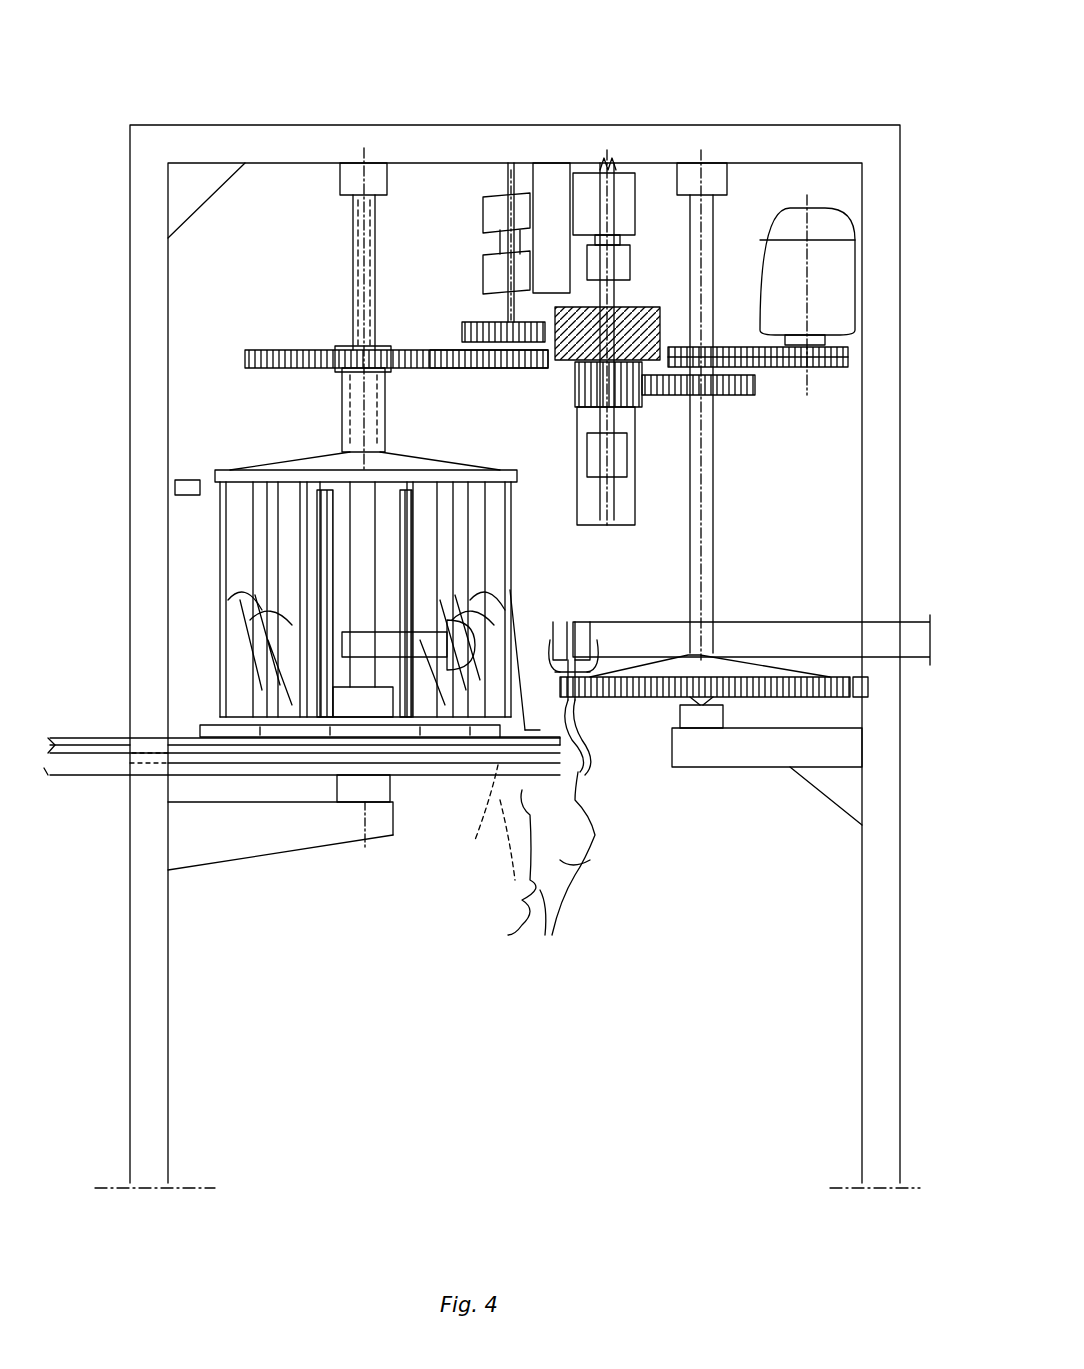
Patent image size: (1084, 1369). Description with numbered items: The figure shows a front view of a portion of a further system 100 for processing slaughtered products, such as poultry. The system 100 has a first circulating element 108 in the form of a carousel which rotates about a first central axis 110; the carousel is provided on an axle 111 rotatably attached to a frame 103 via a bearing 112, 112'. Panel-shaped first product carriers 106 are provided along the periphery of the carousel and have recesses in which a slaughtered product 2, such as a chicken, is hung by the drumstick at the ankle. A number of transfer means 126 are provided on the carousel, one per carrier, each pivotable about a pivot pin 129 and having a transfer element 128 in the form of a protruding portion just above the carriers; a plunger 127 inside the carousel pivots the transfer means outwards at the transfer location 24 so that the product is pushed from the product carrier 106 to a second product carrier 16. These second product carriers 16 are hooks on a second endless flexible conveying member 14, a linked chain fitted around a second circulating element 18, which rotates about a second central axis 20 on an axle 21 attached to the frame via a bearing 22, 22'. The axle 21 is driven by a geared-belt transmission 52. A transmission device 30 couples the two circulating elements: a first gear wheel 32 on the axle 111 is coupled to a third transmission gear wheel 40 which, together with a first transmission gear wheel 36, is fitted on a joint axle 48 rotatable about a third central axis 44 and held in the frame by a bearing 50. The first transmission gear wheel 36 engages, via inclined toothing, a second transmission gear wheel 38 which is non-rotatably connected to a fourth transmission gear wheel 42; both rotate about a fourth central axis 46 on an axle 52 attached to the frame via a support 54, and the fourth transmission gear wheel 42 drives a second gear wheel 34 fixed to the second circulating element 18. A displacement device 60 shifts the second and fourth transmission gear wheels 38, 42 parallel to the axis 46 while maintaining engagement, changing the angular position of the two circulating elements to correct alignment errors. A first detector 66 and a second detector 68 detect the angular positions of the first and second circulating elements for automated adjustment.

The system 100 is at (775, 62).
The frame 103 is at (205, 150).
The bearing 112 is at (321, 193).
The first central axis 110 is at (370, 230).
The axle 111 is at (378, 300).
The first gear wheel 32 is at (285, 342).
The third transmission gear wheel 40 is at (494, 372).
The first circulating element 108 is at (240, 450).
The plunger 127 is at (445, 572).
The pivot pin 129 is at (505, 590).
The transfer means 126 is at (522, 630).
The transfer element 128 is at (548, 672).
The first detector 66 is at (190, 500).
The first product carriers 106 is at (515, 750).
The bearing 112' is at (306, 819).
The bearing 50 is at (558, 165).
The joint axle 48 is at (505, 182).
The third central axis 44 is at (500, 232).
The first transmission gear wheel 36 is at (470, 325).
The joint axle 52 is at (616, 300).
The support 54 is at (636, 215).
The fourth central axis 46 is at (631, 278).
The second transmission gear wheel 38 is at (555, 358).
The fourth transmission gear wheel 42 is at (640, 407).
The transmission device 30 is at (565, 440).
The bearing 22 is at (741, 179).
The second central axis 20 is at (713, 298).
The axle 21 is at (713, 250).
The second gear wheel 34 is at (740, 396).
The displacement device 60 is at (620, 550).
The second endless flexible conveying member 14 is at (795, 625).
The second circulating element 18 is at (738, 640).
The second detector 68 is at (880, 685).
The bearing 22' is at (679, 763).
The second product carriers 16 is at (592, 765).
The transfer location 24 is at (612, 795).
The slaughtered product 2 is at (582, 860).